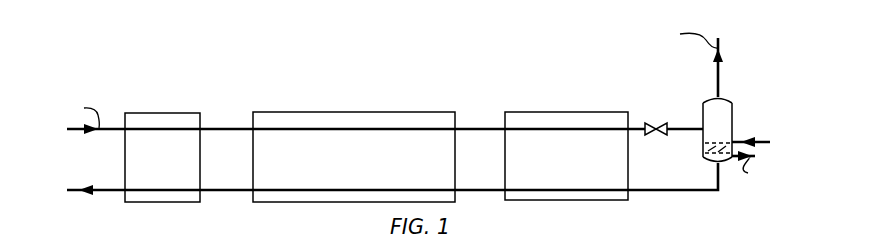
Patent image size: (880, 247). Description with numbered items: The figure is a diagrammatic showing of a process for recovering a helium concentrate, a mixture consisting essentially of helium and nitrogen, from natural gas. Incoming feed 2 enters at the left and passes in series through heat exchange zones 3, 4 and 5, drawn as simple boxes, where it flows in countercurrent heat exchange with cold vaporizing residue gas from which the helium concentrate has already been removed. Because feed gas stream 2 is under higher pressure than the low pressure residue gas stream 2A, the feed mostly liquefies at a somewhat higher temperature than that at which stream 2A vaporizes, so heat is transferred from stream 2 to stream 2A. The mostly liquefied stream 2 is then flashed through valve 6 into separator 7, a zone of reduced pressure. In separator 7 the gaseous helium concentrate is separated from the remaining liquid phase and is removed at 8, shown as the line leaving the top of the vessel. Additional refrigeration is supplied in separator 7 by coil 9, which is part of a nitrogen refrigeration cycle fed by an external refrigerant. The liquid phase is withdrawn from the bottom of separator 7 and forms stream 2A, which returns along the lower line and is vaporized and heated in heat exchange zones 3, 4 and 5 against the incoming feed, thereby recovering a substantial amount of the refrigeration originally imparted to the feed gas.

The feed gas stream 2 is at (78, 133).
The vaporizing residue gas stream 2A is at (676, 190).
The heat exchange zone 3 is at (169, 167).
The heat exchange zone 4 is at (368, 167).
The heat exchange zone 5 is at (573, 167).
The valve 6 is at (664, 133).
The separator 7 is at (732, 112).
The helium concentrate outlet 8 is at (722, 70).
The coil 9 is at (705, 145).